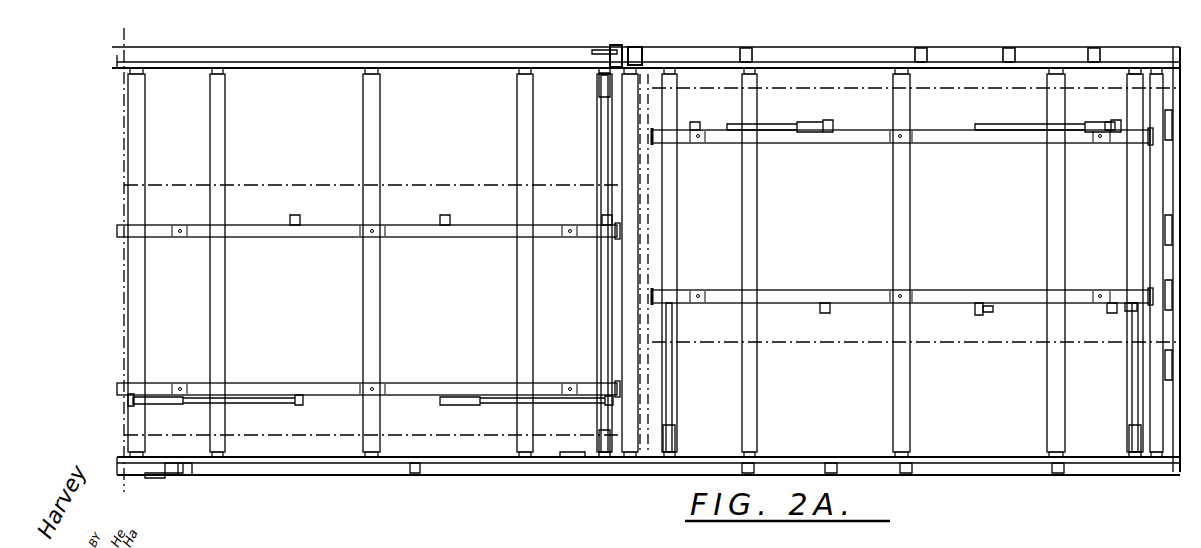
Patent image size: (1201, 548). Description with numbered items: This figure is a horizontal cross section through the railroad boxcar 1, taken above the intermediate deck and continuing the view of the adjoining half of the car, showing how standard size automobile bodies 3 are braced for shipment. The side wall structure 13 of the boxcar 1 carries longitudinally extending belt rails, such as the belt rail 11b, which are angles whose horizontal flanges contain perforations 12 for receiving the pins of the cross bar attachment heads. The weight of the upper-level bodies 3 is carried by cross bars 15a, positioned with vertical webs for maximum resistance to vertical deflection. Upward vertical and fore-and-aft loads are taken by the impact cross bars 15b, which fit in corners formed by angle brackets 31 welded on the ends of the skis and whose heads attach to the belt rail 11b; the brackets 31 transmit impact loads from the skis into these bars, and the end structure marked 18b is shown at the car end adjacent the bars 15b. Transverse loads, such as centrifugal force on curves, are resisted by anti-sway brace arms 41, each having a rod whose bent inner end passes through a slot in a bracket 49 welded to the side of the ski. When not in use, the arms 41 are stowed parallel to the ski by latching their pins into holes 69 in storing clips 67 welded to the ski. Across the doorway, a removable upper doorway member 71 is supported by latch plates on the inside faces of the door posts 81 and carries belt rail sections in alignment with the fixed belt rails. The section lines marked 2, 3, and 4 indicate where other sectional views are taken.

The railroad boxcar 1 is at (365, 469).
The section line 2- 2 is at (1115, 310).
The automobile body 3 is at (448, 175).
The section line 4- 4 is at (1118, 103).
The belt rail 11b is at (985, 30).
The perforations 12 is at (578, 452).
The side wall structure 13 is at (832, 462).
The cross bars 15a is at (210, 110).
The cross bars 15b is at (688, 70).
The guide bracket 18b is at (1165, 228).
The angle brackets 31 is at (655, 165).
The anti-sway brace arms 41 is at (590, 151).
The bracket 49 is at (680, 130).
The storing clips 67 is at (975, 312).
The holes 69 is at (993, 310).
The upper doorway member 71 is at (451, 50).
The door posts 81 is at (632, 70).